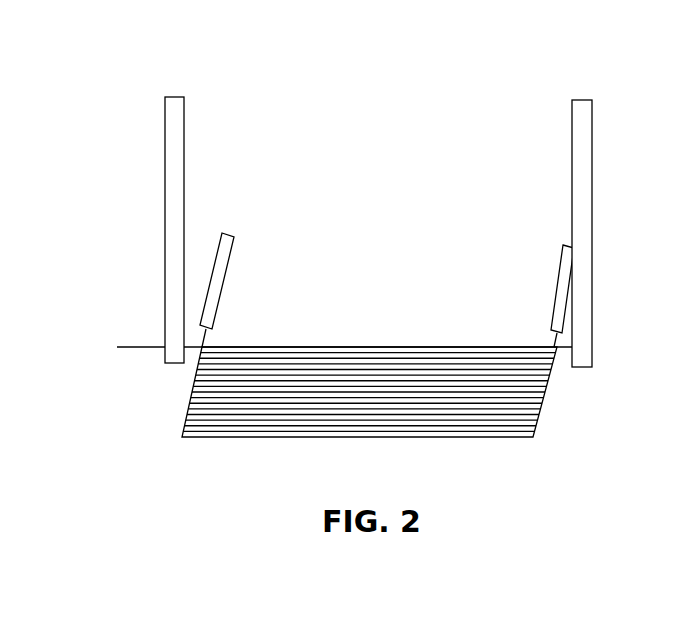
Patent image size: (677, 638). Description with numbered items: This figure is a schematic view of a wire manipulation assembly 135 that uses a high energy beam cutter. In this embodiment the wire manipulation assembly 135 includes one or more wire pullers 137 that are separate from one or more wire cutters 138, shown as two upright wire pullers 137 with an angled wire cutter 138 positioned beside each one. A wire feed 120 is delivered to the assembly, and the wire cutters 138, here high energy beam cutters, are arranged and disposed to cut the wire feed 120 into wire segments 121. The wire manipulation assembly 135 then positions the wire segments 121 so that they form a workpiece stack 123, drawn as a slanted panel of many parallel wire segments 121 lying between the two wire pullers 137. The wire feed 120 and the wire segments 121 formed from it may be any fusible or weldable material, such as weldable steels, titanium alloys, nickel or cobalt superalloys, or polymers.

The wire feed 120 is at (134, 349).
The wire segments 121 is at (538, 402).
The workpiece stack 123 is at (426, 434).
The wire manipulation assembly 135 is at (381, 189).
The wire pullers 137 is at (169, 97).
The wire cutters 138 is at (228, 233).